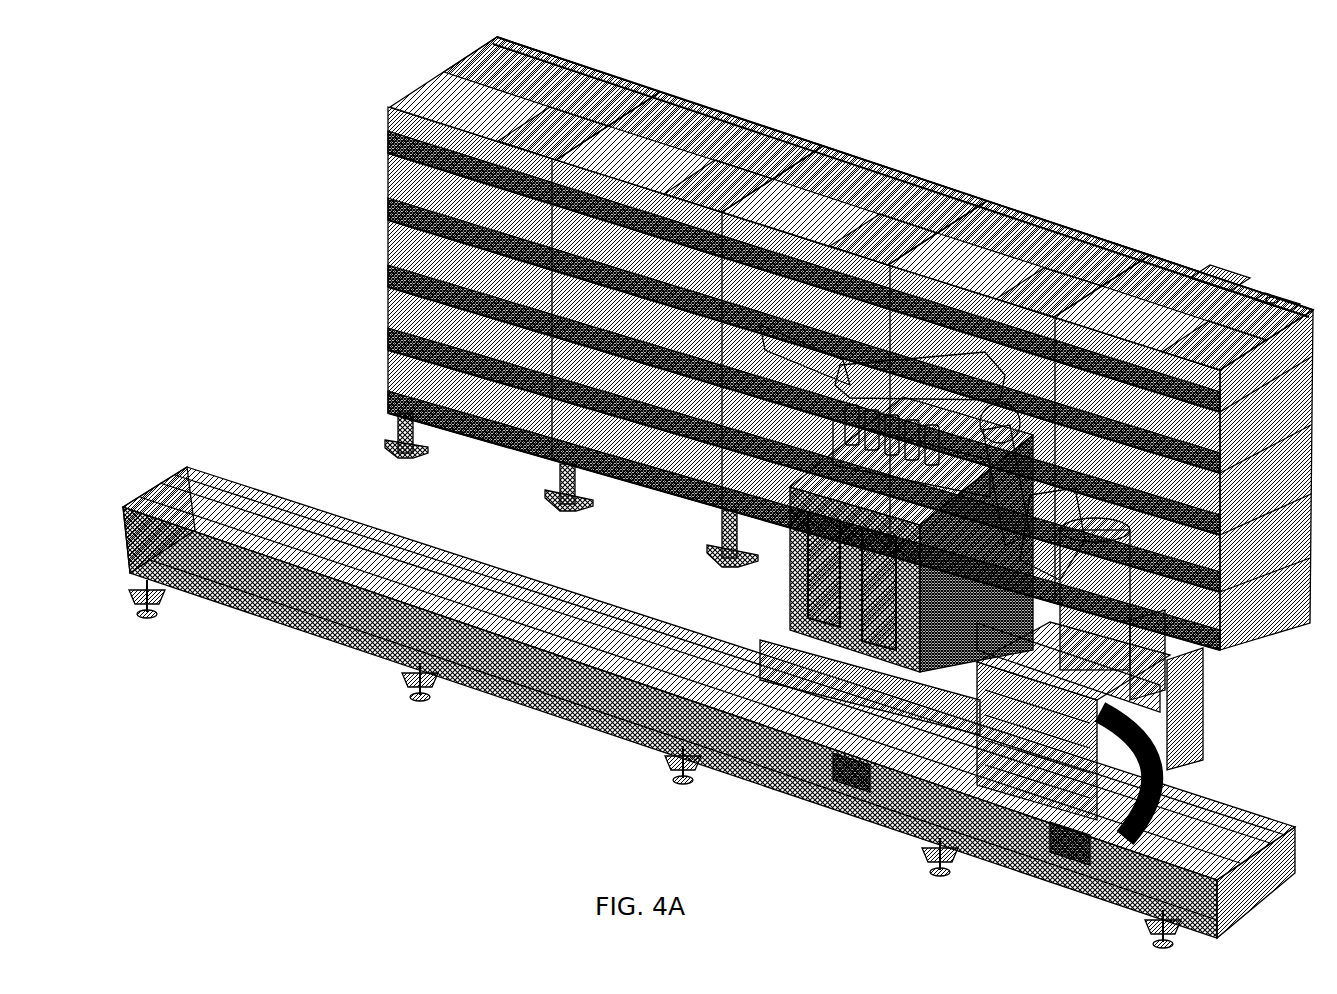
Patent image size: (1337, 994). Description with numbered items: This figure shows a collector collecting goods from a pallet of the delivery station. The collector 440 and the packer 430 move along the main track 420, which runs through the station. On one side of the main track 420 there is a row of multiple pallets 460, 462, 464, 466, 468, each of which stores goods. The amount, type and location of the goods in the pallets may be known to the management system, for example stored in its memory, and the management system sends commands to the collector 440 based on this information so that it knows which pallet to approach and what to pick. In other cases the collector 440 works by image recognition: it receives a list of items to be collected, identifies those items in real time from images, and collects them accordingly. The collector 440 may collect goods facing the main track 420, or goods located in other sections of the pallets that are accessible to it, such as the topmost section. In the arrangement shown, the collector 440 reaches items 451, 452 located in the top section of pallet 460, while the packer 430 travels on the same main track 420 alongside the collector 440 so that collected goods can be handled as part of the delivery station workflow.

The main track 420 is at (238, 466).
The packer 430 is at (790, 616).
The collector 440 is at (1198, 746).
The item 451 is at (1212, 290).
The item 452 is at (1268, 303).
The pallet 460 is at (1176, 262).
The pallet 462 is at (1040, 210).
The pallet 464 is at (880, 152).
The pallet 466 is at (731, 110).
The pallet 468 is at (607, 76).